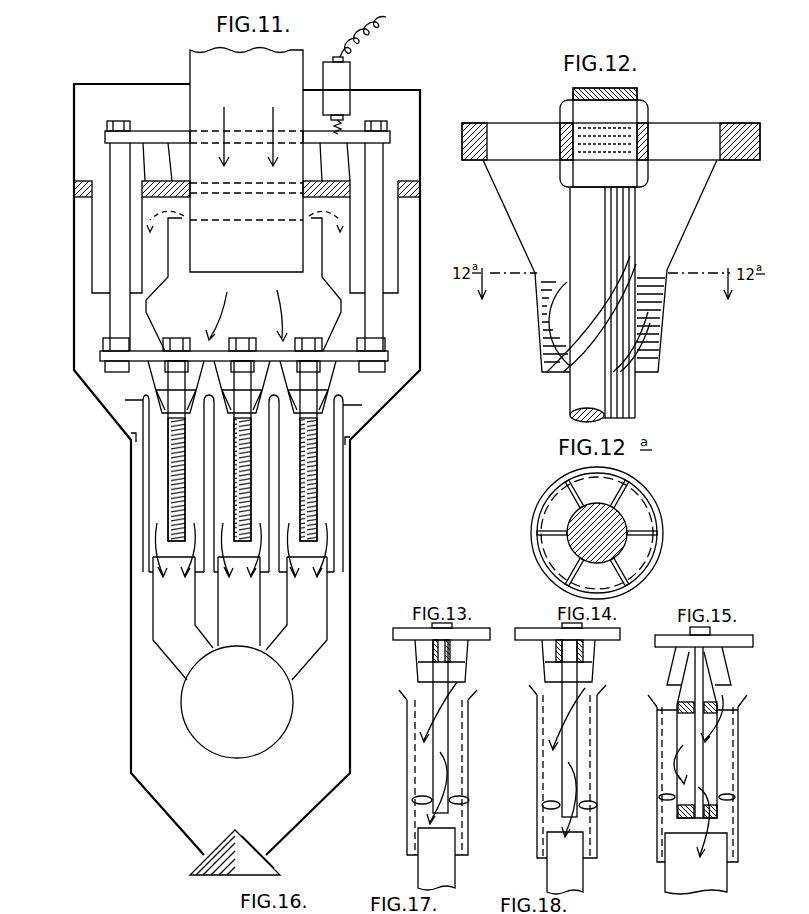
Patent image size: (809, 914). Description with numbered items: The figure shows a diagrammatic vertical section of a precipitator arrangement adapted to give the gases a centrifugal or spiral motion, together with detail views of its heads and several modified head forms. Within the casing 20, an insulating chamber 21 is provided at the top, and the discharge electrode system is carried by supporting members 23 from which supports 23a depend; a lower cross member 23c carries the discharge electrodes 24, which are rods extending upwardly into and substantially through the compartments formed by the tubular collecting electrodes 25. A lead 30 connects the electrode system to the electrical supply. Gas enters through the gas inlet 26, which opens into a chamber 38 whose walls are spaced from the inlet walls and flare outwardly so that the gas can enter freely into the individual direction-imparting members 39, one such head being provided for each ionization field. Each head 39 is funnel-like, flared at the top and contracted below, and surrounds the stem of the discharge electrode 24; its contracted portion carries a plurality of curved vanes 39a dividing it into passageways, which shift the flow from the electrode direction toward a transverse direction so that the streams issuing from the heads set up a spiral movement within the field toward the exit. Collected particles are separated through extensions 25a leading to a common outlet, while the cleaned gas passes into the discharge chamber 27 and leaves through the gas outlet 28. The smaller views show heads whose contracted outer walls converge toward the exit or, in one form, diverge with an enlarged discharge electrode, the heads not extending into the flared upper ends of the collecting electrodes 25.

In FIG. 11, the casing 20 is at (417, 332).
In FIG. 11, the insulating chamber 21 is at (384, 100).
In FIG. 11, the supporting members 23 is at (390, 135).
In FIG. 11, the supports 23a is at (458, 228).
In FIG. 11, the lower plate 23c is at (463, 366).
In FIG. 12, the lower plate 23c is at (761, 111).
In FIG. 13, the lower plate 23c is at (510, 662).
In FIG. 14, the lower plate 23c is at (567, 631).
In FIG. 15, the lower plate 23c is at (774, 664).
In FIG. 11, the discharge electrodes 24 is at (222, 510).
In FIG. 12, the discharge electrodes 24 is at (569, 394).
In FIG. 12A, the discharge electrodes 24 is at (627, 551).
In FIG. 13, the discharge electrodes 24 is at (433, 765).
In FIG. 14, the discharge electrodes 24 is at (562, 716).
In FIG. 15, the discharge electrodes 24 is at (697, 721).
In FIG. 11, the collecting electrodes 25 is at (207, 492).
In FIG. 13, the collecting electrodes 25 is at (407, 815).
In FIG. 14, the collecting electrodes 25 is at (537, 782).
In FIG. 15, the collecting electrodes 25 is at (657, 818).
In FIG. 11, the extensions 25a is at (391, 583).
In FIG. 13, the extensions 25a is at (426, 867).
In FIG. 14, the extensions 25a is at (547, 866).
In FIG. 15, the extensions 25a is at (665, 873).
In FIG. 11, the gas inlet 26 is at (246, 160).
In FIG. 11, the discharge chamber 27 is at (235, 794).
In FIG. 11, the gas outlet 28 is at (237, 702).
In FIG. 11, the lead wire 30 is at (375, 37).
In FIG. 11, the chamber 38 is at (244, 281).
In FIG. 11, the direction-imparting members 39 is at (156, 374).
In FIG. 12, the direction-imparting members 39 is at (677, 215).
In FIG. 12A, the direction-imparting members 39 is at (536, 506).
In FIG. 12, the vanes 39a is at (716, 329).
In FIG. 12A, the vanes 39a is at (711, 502).